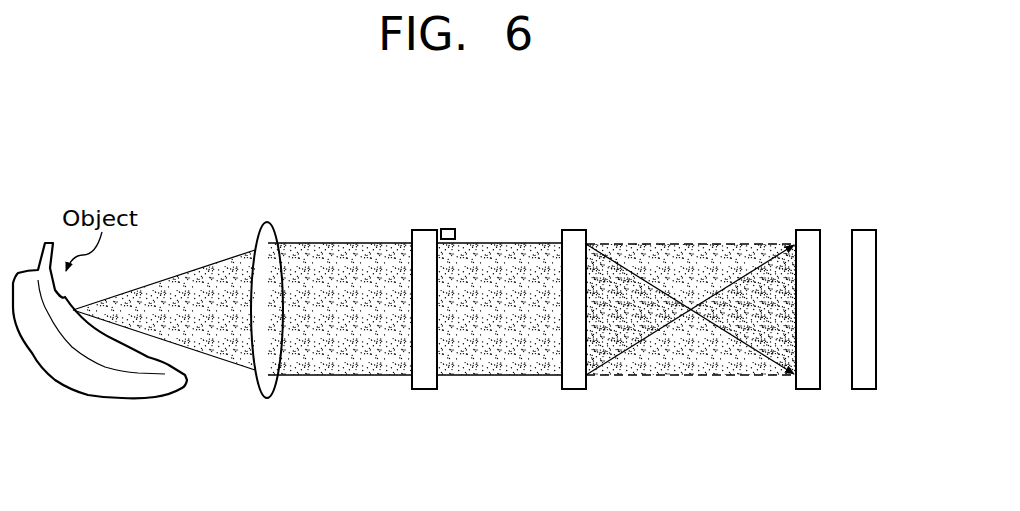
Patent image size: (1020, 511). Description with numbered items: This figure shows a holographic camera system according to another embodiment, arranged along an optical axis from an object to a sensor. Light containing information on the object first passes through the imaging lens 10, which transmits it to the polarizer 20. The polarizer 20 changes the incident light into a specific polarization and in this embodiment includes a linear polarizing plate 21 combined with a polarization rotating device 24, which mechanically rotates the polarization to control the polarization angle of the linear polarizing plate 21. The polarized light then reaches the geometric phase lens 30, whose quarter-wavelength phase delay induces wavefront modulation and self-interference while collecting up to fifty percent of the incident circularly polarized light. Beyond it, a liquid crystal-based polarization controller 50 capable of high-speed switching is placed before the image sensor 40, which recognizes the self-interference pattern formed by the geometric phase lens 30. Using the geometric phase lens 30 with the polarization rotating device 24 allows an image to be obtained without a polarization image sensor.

The imaging lens 10 is at (267, 222).
The polarizer 20 is at (462, 365).
The linear polarizing plate 21 is at (424, 389).
The polarization rotating device 24 is at (447, 239).
The geometric phase lens 30 is at (576, 230).
The image sensor 40 is at (865, 230).
The liquid crystal-based polarization controller 50 is at (806, 230).